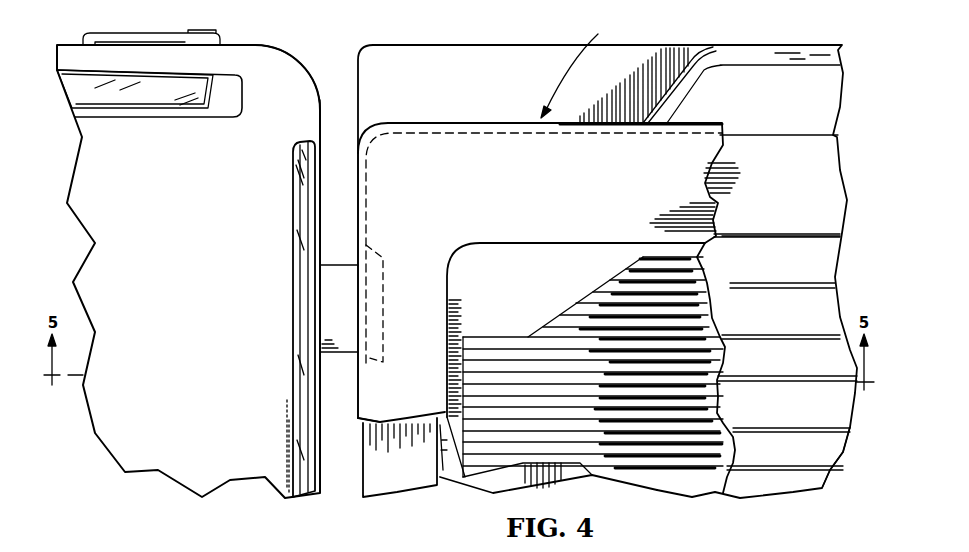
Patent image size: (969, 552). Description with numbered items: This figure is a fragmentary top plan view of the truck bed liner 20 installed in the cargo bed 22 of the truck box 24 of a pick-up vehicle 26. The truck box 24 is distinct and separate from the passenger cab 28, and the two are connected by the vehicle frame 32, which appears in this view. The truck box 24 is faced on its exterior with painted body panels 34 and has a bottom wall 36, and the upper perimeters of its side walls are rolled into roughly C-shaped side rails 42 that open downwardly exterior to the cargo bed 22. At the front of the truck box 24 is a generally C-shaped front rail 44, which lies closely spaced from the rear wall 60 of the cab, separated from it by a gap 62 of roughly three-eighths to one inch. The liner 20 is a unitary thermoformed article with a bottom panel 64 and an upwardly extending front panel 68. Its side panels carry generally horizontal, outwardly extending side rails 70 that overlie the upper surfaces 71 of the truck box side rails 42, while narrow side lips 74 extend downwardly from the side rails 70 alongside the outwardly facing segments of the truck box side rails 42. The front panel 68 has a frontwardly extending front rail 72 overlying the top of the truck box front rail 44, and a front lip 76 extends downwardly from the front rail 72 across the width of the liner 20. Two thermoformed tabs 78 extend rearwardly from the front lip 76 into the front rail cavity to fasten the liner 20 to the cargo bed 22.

The truck bed liner 20 is at (579, 69).
The cargo bed 22 is at (809, 238).
The truck box 24 is at (842, 452).
The vehicle 26 is at (96, 463).
The passenger cab 28 is at (283, 60).
The vehicle frame 32 is at (340, 354).
The painted body panels 34 is at (787, 45).
The bottom wall 36 is at (773, 406).
The side rails 42 is at (850, 221).
The front rail 44 is at (398, 492).
The rear wall 60 is at (315, 474).
The gap 62 is at (318, 97).
The bottom panel 64 is at (726, 355).
The front panel 68 is at (450, 294).
The side rails 70 is at (524, 203).
The upper surfaces 71 is at (766, 203).
The front rail 72 is at (358, 418).
The side lips 74 is at (463, 123).
The front lip 76 is at (358, 192).
The tabs 78 is at (385, 256).